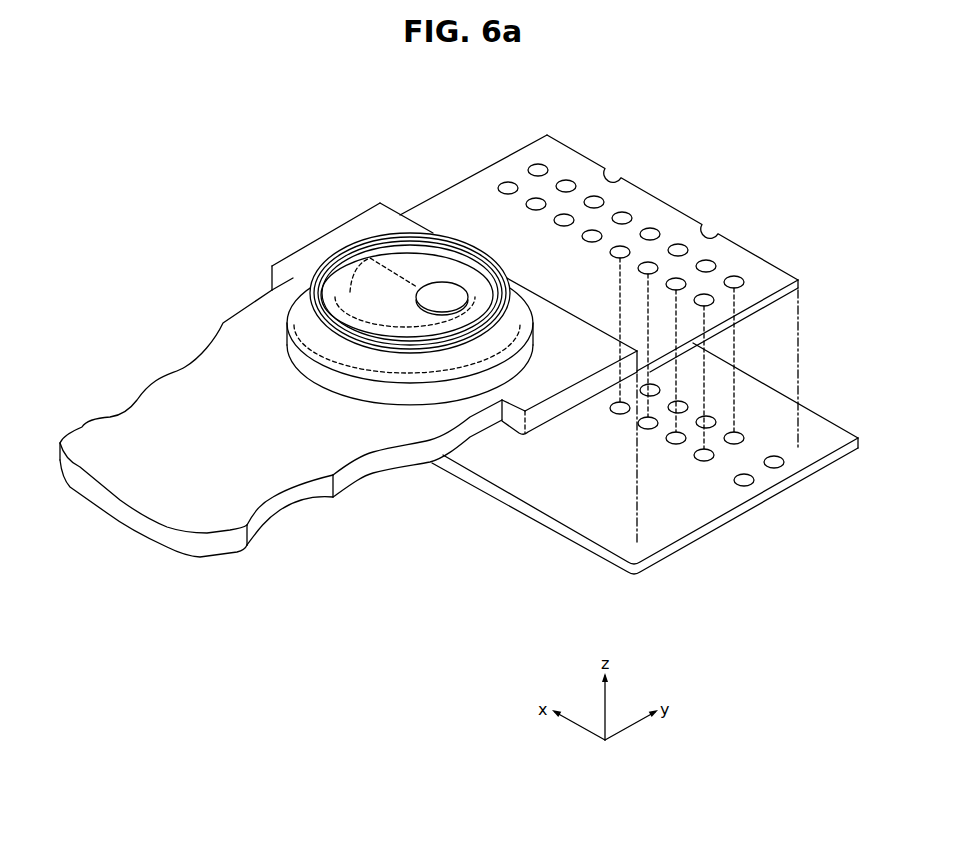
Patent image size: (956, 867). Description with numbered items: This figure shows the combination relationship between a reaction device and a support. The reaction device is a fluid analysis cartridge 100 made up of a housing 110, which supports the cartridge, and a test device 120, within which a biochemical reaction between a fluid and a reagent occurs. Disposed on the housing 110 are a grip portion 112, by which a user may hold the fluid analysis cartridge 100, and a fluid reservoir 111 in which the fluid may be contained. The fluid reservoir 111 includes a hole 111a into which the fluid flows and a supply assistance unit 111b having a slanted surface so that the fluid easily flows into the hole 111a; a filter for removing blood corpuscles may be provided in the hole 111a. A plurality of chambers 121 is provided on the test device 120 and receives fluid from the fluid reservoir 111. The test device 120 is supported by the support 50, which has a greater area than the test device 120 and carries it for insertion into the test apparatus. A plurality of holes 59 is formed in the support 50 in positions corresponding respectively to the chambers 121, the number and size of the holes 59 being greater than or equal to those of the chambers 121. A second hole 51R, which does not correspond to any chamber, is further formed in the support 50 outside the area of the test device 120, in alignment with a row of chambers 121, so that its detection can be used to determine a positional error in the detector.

The fluid analysis cartridge 100 is at (248, 103).
The housing 110 is at (348, 401).
The fluid reservoir 111 is at (410, 266).
The hole 111a is at (458, 297).
The supply assistance unit 111b is at (382, 300).
The grip portion 112 is at (178, 398).
The test device 120 is at (545, 306).
The chambers 121 is at (537, 160).
The support 50 is at (645, 483).
The holes 59 is at (704, 458).
The second hole 51R is at (746, 481).